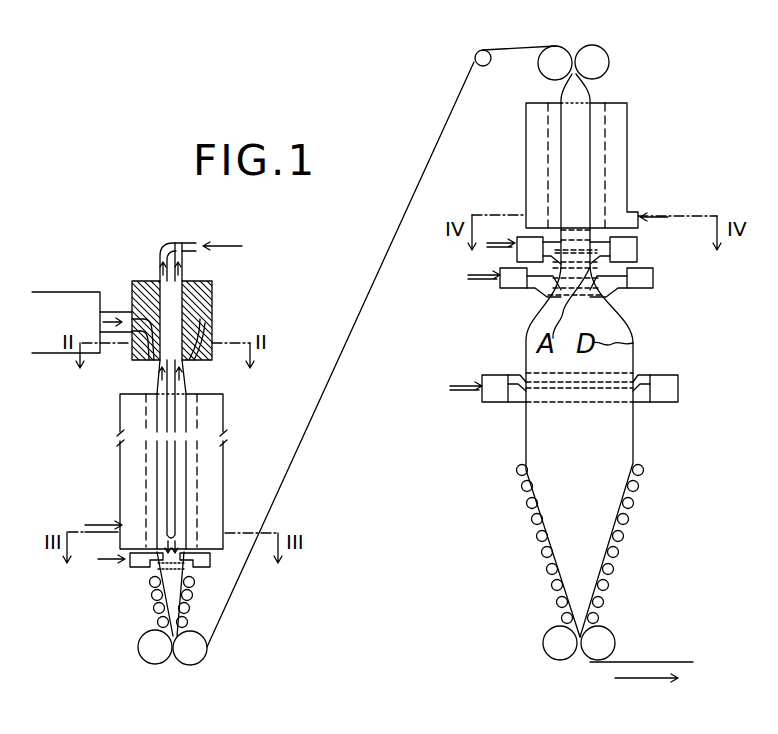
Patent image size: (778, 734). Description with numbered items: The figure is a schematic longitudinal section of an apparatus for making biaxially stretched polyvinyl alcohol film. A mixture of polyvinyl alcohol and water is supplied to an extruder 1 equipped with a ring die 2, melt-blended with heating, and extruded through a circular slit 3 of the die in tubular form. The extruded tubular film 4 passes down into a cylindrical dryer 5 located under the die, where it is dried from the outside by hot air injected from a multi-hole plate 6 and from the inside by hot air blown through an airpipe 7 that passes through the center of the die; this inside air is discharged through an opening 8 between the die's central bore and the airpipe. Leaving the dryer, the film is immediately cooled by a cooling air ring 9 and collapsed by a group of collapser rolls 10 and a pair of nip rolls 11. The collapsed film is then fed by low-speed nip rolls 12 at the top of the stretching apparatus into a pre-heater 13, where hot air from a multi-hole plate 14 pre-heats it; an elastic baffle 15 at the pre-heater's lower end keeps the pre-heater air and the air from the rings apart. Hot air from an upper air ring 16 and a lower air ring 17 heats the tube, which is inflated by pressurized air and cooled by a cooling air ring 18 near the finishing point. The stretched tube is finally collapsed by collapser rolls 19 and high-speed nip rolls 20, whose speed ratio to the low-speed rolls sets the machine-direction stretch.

The extruder 1 is at (63, 316).
The ring die 2 is at (147, 303).
The circular slit 3 is at (157, 361).
The tubular film 4 is at (186, 363).
The cylindrical dryer 5 is at (133, 456).
The multi-hole plate 6 is at (146, 485).
The airpipe 7 is at (170, 483).
The opening 8 is at (183, 303).
The cooling air ring 9 is at (207, 562).
The collapser rolls 10 is at (158, 608).
The nip rolls 11 is at (153, 648).
The low-speed nip rolls 12 is at (593, 63).
The pre-heater 13 is at (612, 138).
The multi-hole plate 14 is at (605, 183).
The baffle 15 is at (597, 230).
The upper air ring 16 is at (625, 250).
The lower air ring 17 is at (640, 278).
The cooling air ring 18 is at (662, 390).
The collapser rolls 19 is at (628, 519).
The high-speed nip rolls 20 is at (598, 647).